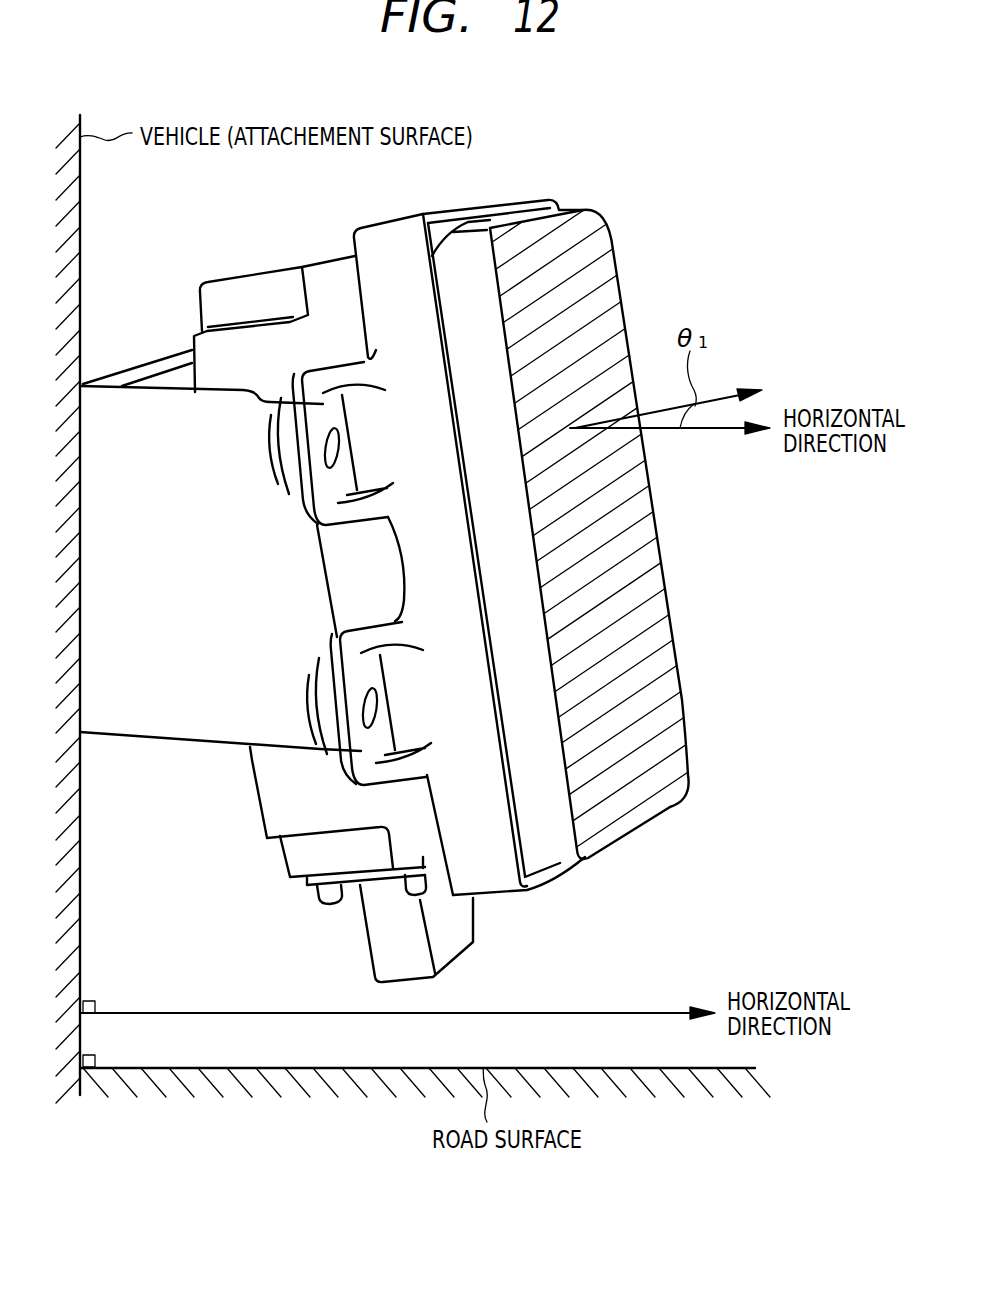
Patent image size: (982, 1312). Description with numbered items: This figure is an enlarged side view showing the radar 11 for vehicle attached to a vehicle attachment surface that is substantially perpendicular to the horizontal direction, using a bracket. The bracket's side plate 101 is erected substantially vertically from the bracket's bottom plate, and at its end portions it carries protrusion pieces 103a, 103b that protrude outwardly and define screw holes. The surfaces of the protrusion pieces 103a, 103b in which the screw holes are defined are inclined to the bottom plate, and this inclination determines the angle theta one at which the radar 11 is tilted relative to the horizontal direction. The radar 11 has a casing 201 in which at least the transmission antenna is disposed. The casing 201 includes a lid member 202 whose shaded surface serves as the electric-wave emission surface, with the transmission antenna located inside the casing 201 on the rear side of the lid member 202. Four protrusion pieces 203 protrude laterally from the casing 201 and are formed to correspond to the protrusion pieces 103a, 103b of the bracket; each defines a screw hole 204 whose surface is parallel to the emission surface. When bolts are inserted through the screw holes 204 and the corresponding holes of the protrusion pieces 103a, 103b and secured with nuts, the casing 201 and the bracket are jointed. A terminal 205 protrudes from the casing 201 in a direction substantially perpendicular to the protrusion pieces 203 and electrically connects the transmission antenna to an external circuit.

The radar for vehicle 11 is at (636, 207).
The side plate 101 is at (148, 728).
The protrusion piece 103a is at (293, 503).
The protrusion piece 103b is at (307, 692).
The casing 201 is at (328, 255).
The lid member 202 is at (650, 582).
The protrusion piece 203 is at (292, 380).
The screw hole 204 is at (338, 447).
The terminal 205 is at (463, 933).